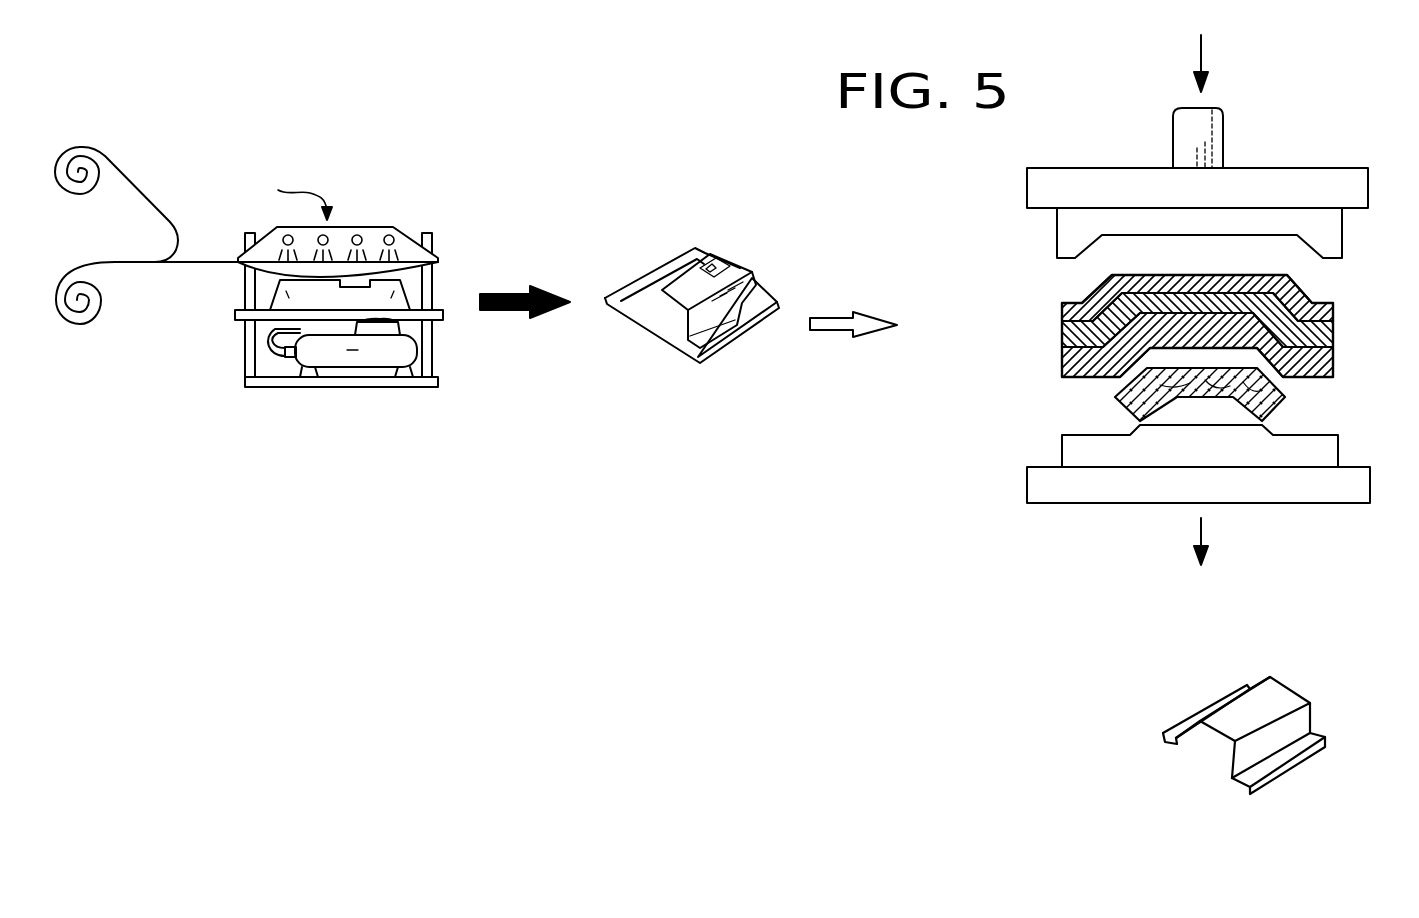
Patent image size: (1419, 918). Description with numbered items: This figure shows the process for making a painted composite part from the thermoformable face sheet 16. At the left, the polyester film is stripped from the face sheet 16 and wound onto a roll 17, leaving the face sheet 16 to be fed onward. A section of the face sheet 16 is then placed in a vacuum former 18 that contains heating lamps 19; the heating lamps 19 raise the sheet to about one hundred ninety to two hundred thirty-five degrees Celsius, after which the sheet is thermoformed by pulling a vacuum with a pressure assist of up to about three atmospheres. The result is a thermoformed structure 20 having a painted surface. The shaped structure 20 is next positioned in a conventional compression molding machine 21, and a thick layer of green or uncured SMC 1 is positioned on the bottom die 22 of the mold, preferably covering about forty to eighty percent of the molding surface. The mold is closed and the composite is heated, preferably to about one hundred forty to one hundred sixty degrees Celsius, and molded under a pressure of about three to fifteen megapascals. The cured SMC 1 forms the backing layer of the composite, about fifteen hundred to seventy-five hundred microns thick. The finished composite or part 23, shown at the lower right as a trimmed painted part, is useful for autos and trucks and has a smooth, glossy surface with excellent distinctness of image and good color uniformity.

The SMC 1 is at (1288, 407).
The face sheet 16 is at (93, 323).
The roll 17 is at (90, 140).
The vacuum former 18 is at (347, 312).
The heating lamps 19 is at (404, 228).
The thermoformed structure 20 is at (617, 312).
The compression molding machine 21 is at (1358, 168).
The lower press platen 22 is at (1340, 452).
The composite or part 23 is at (1205, 767).